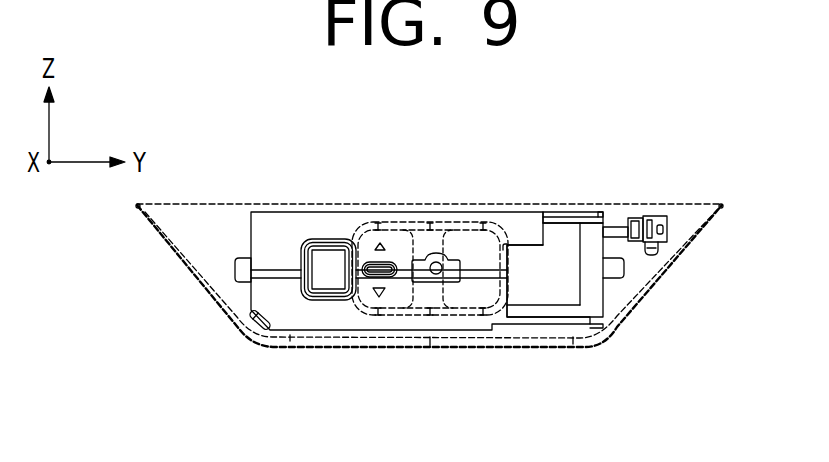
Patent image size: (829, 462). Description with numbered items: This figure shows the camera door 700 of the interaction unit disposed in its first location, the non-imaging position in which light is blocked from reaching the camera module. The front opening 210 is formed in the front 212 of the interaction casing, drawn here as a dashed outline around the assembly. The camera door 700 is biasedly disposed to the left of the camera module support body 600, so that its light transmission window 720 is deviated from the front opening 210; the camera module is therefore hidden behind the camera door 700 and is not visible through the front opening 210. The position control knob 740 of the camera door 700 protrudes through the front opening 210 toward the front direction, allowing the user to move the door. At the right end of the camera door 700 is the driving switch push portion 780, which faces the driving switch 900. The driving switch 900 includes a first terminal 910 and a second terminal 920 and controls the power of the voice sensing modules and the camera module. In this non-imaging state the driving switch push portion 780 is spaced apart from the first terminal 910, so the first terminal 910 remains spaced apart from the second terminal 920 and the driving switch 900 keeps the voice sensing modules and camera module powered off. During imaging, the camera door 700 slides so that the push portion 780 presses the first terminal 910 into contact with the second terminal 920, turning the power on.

The front opening 210 is at (444, 316).
The front 212 is at (547, 342).
The camera module support body 600 is at (572, 283).
The camera door 700 is at (268, 220).
The light transmission window 720 is at (328, 252).
The position control knob 740 is at (376, 262).
The driving switch push portion 780 is at (545, 233).
The driving switch 900 is at (660, 244).
The first terminal 910 is at (632, 218).
The second terminal 920 is at (657, 216).